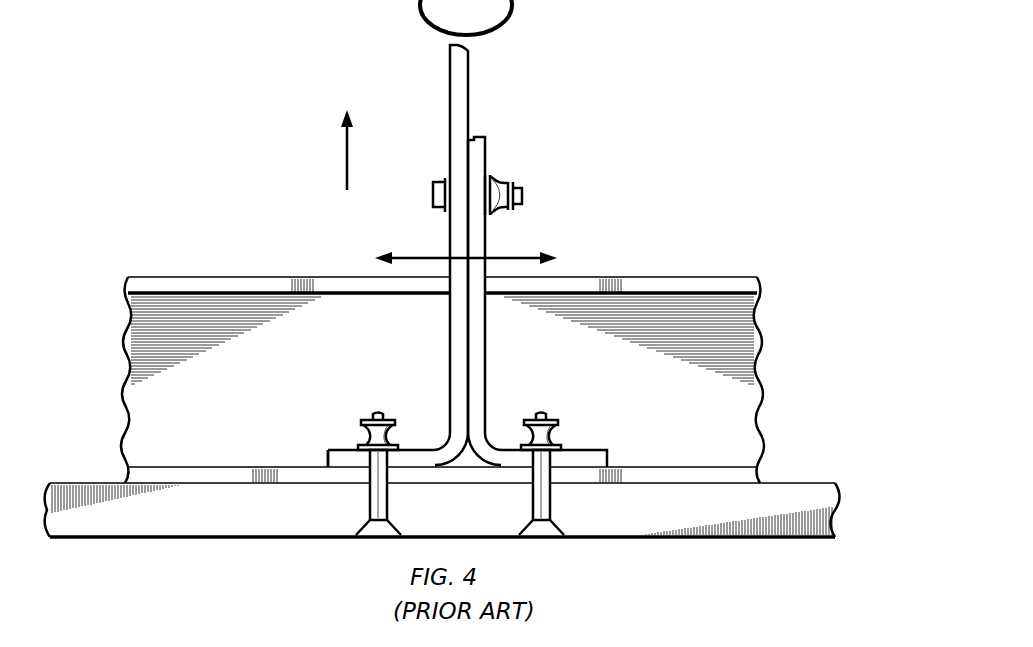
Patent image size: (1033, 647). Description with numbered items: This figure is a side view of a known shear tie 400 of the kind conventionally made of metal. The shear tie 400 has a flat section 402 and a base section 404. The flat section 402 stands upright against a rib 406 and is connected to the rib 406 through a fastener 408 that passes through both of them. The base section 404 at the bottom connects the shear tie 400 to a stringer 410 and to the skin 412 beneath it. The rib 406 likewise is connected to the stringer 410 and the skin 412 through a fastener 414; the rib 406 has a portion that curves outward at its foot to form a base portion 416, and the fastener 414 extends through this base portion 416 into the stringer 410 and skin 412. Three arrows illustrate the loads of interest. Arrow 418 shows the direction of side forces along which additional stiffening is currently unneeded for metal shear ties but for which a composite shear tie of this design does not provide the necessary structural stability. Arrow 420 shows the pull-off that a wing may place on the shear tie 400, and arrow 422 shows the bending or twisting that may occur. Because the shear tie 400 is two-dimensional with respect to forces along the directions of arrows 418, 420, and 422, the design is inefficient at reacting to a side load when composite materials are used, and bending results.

The shear tie 400 is at (476, 255).
The flat section 402 is at (488, 362).
The base section 404 is at (610, 456).
The rib 406 is at (449, 111).
The fastener 408 is at (524, 198).
The stringer 410 is at (683, 276).
The skin 412 is at (285, 545).
The fastener 414 is at (378, 412).
The base portion 416 is at (326, 456).
The arrow 418 is at (406, 257).
The arrow 420 is at (344, 161).
The arrow 422 is at (514, 14).